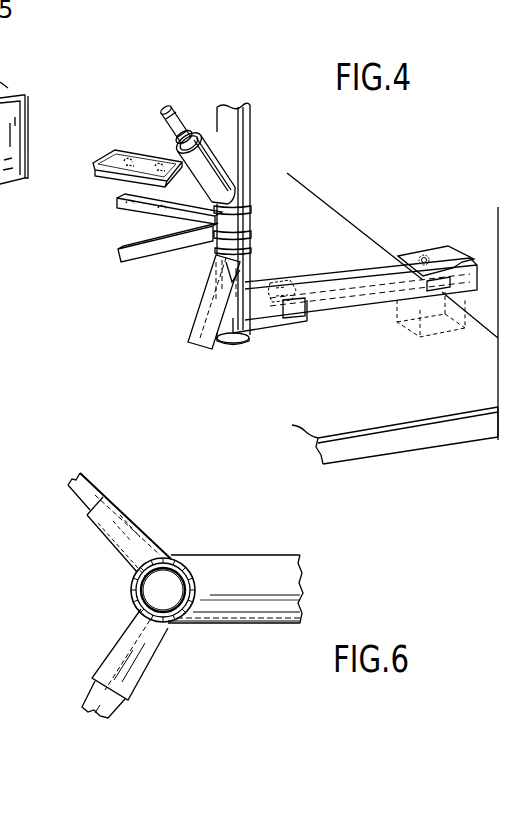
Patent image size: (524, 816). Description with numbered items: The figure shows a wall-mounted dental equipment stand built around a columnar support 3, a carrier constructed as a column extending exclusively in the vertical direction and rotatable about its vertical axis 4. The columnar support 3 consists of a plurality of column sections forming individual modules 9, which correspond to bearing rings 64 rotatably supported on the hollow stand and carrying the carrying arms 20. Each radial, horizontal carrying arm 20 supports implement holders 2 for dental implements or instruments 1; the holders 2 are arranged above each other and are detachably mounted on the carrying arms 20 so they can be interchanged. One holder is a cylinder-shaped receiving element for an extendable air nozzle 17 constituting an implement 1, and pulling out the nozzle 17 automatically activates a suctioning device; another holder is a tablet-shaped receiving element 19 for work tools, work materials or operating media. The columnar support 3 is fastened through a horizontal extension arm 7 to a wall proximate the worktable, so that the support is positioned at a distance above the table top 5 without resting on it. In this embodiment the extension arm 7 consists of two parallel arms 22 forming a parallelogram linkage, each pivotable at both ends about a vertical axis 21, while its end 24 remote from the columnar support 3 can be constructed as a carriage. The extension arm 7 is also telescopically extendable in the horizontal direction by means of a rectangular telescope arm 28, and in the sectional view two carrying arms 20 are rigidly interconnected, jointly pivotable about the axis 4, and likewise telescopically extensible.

In FIG. 4, the dental implements or instruments 1 is at (175, 117).
In FIG. 4, the implement holders 2 is at (204, 129).
In FIG. 4, the columnar support 3 is at (254, 126).
In FIG. 6, the columnar support 3 is at (131, 597).
In FIG. 6, the vertical axis 4 is at (173, 587).
In FIG. 4, the table top 5 is at (410, 410).
In FIG. 4, the extension arm 7 is at (348, 311).
In FIG. 6, the extension arm 7 is at (277, 627).
In FIG. 4, the individual modules 9 is at (251, 208).
In FIG. 4, the air nozzle 17 is at (160, 108).
In FIG. 4, the tablet-shaped receiving element 19 is at (122, 152).
In FIG. 4, the carrying arm 20 is at (180, 247).
In FIG. 6, the carrying arm 20 is at (122, 528).
In FIG. 4, the vertical axis 21 is at (332, 262).
In FIG. 4, the parallel arms 22 is at (382, 273).
In FIG. 4, the end of the extension arm 24 is at (452, 250).
In FIG. 6, the telescope arm 28 is at (257, 570).
In FIG. 4, the bearing rings 64 is at (251, 218).